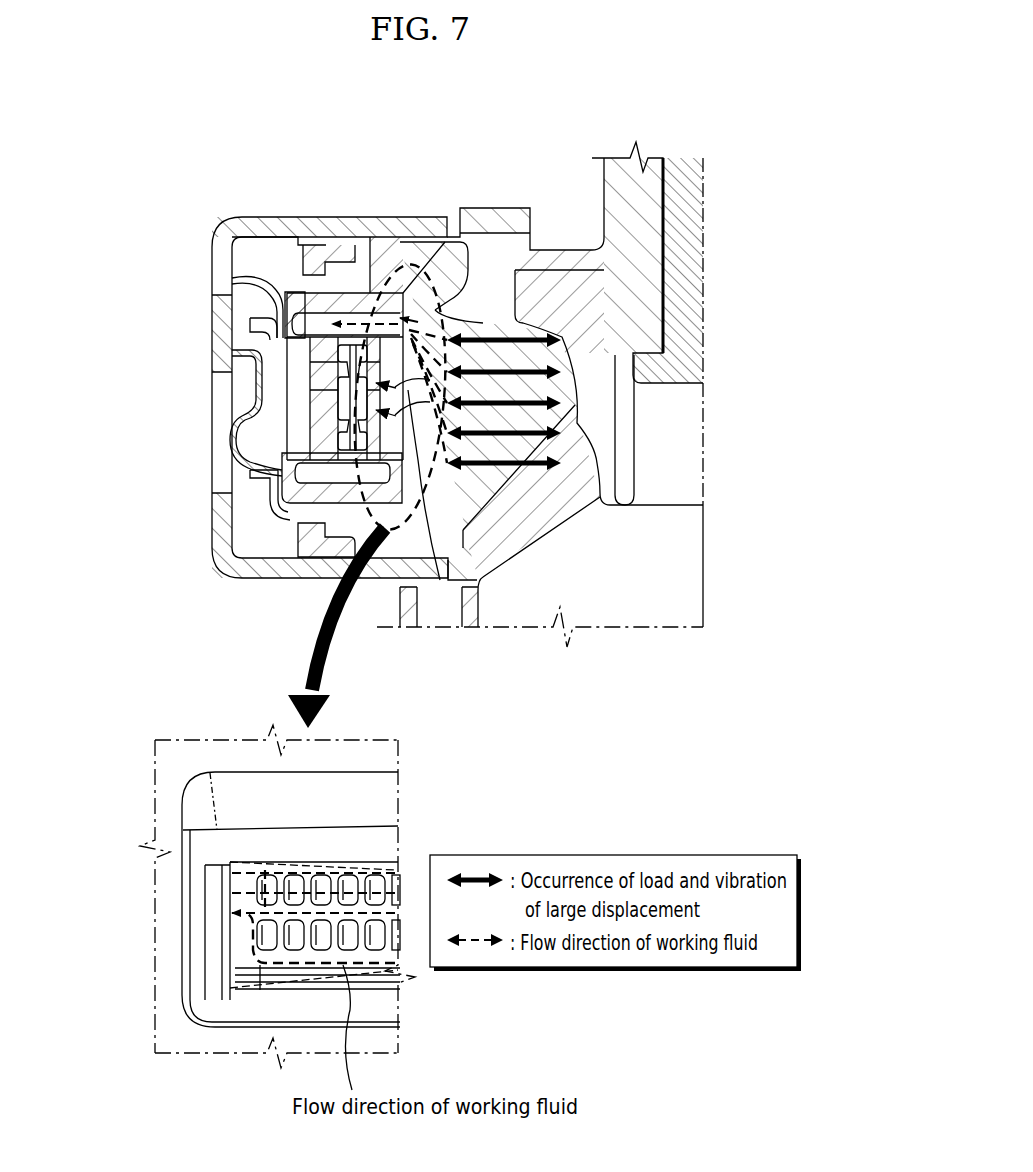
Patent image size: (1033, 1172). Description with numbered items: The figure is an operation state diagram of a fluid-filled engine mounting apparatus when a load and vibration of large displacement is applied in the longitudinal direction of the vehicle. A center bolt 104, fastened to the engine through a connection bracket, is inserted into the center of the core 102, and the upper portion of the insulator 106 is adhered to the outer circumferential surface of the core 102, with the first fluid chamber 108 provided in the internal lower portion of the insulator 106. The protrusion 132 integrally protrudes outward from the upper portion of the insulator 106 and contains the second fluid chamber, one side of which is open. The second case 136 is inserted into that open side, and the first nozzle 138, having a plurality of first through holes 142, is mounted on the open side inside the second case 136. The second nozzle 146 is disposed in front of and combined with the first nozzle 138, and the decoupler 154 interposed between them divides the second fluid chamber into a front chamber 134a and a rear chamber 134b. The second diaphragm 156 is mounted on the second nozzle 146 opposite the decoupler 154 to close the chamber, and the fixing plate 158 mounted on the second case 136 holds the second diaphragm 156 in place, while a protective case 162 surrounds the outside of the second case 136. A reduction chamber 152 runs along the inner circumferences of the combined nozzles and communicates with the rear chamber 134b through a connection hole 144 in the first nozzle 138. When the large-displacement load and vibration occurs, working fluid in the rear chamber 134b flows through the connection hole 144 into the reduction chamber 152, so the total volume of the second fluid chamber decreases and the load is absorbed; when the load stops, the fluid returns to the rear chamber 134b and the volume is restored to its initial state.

The core 102 is at (637, 297).
The center bolt 104 is at (687, 233).
The insulator 106 is at (510, 550).
The first fluid chamber 108 is at (670, 567).
The protrusion 132 is at (563, 255).
The front chamber 134a is at (488, 448).
The rear chamber 134b is at (262, 360).
The second case 136 is at (413, 243).
The first nozzle 138 is at (324, 315).
The first through holes 142 is at (447, 380).
The connection hole 144 is at (483, 290).
The second nozzle 146 is at (293, 273).
The reduction chamber 152 is at (314, 286).
The decoupler 154 is at (338, 383).
The second diaphragm 156 is at (262, 333).
The fixing plate 158 is at (285, 283).
The protective case 162 is at (265, 223).